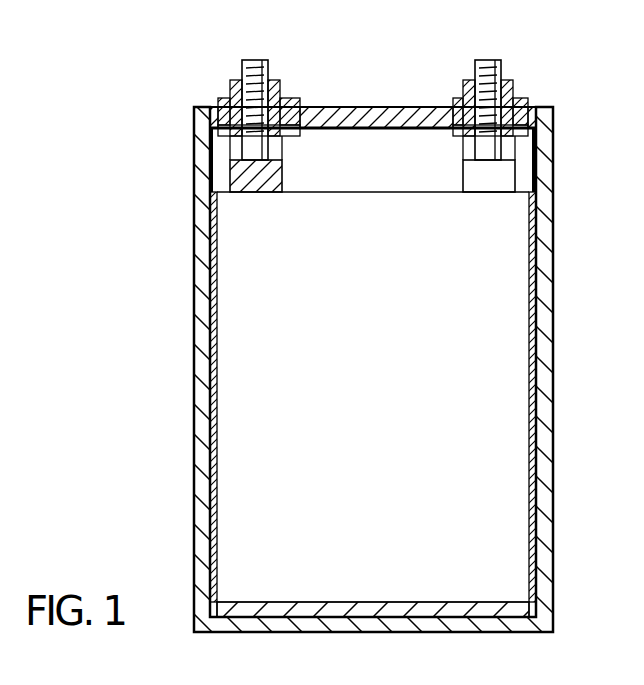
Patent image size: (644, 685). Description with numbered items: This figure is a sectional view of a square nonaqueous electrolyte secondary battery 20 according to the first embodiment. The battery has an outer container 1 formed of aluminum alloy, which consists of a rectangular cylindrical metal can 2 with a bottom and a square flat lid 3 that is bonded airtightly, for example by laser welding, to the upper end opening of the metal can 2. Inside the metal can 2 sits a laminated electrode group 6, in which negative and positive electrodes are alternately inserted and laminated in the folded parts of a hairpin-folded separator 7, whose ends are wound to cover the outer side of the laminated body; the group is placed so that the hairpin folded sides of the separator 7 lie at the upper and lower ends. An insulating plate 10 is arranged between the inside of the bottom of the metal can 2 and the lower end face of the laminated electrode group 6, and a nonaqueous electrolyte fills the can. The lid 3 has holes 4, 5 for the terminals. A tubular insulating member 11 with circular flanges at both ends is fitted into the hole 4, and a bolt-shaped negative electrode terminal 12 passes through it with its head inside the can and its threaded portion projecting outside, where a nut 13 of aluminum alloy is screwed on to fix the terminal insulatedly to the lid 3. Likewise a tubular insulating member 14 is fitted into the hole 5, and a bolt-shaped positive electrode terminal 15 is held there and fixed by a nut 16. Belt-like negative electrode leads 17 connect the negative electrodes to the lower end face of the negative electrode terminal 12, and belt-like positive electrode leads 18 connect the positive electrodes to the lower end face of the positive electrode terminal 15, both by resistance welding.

The outer container 1 is at (598, 97).
The metal can 2 is at (542, 152).
The lid 3 is at (538, 112).
The hole 4 is at (278, 108).
The hole 5 is at (519, 100).
The laminated electrode group 6 is at (218, 186).
The separator 7 is at (537, 312).
The insulating plate 10 is at (537, 612).
The tubular insulating member 11 is at (220, 100).
The negative electrode terminal 12 is at (255, 66).
The nut 13 is at (236, 80).
The tubular insulating member 14 is at (459, 98).
The positive electrode terminal 15 is at (490, 66).
The nut 16 is at (511, 92).
The negative electrode leads 17 is at (272, 178).
The positive electrode leads 18 is at (465, 177).
The square nonaqueous electrolyte secondary battery 20 is at (592, 30).